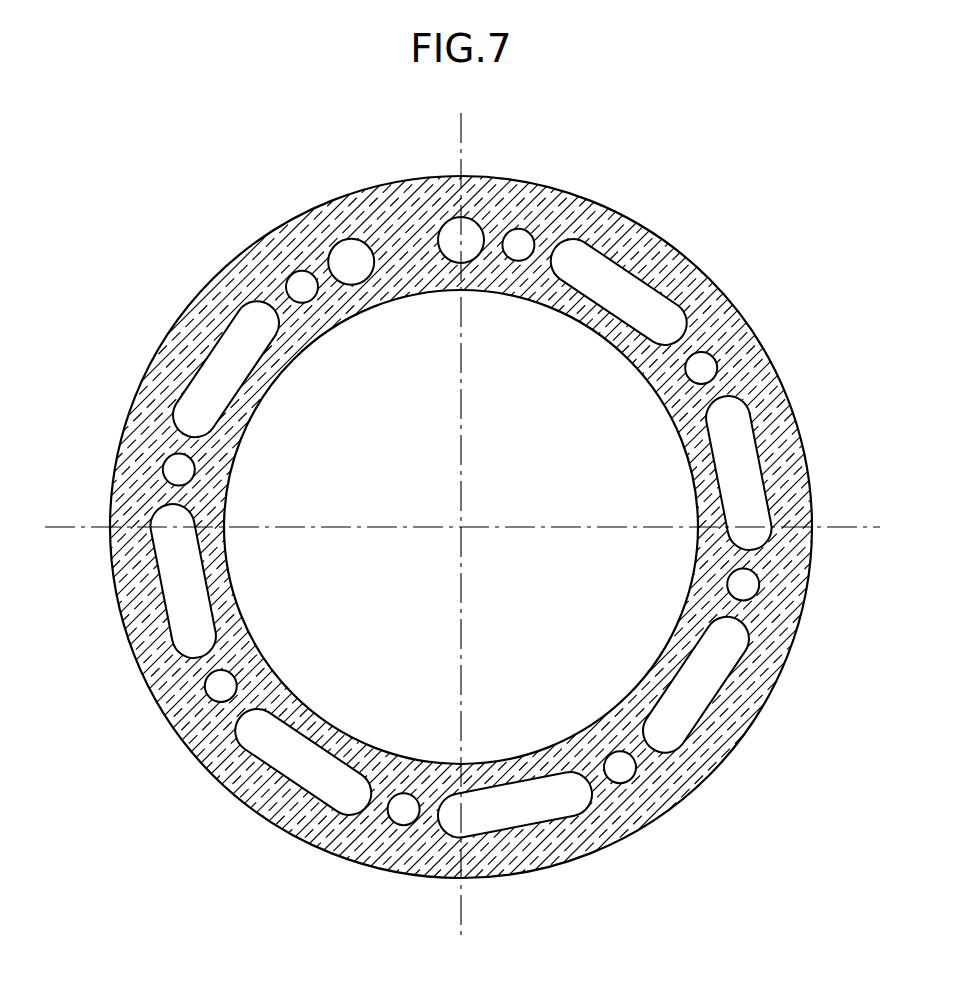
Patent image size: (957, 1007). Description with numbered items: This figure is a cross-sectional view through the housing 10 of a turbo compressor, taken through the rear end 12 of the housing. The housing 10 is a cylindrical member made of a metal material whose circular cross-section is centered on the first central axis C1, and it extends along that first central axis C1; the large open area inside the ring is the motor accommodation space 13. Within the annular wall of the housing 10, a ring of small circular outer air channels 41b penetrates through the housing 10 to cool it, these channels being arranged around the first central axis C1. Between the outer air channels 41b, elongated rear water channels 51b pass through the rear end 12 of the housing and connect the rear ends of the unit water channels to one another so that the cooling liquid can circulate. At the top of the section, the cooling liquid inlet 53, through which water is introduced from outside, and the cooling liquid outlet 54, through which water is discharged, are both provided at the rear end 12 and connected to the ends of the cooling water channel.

The housing 10 is at (708, 227).
The rear end of the housing 12 is at (619, 220).
The motor accommodation space 13 is at (634, 458).
The outer air channels 41b is at (302, 287).
The rear water channels 51b is at (600, 287).
The cooling liquid inlet 53 is at (468, 248).
The cooling liquid outlet 54 is at (353, 272).
The first central axis C1 is at (463, 530).